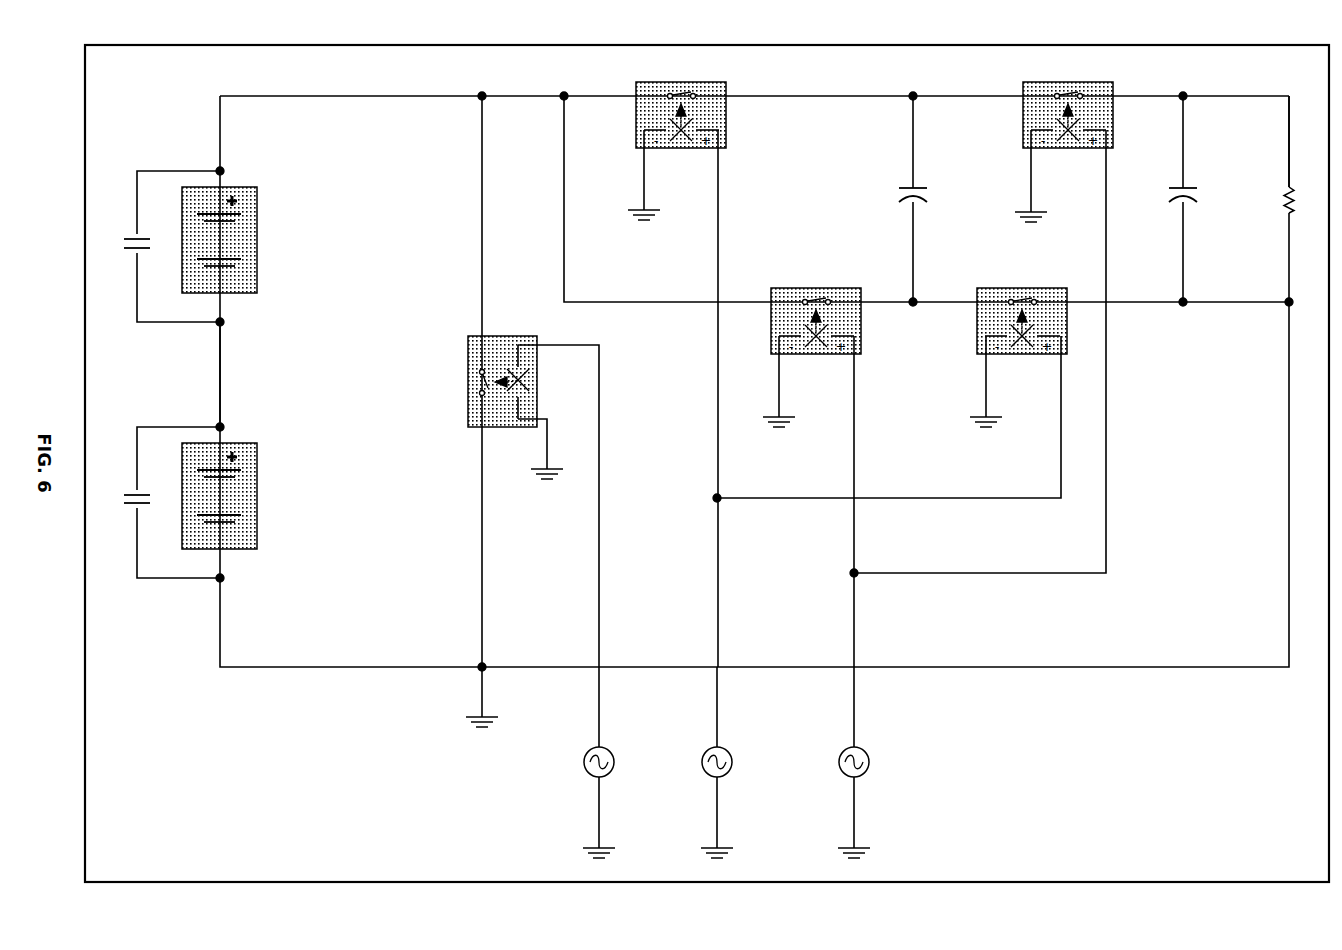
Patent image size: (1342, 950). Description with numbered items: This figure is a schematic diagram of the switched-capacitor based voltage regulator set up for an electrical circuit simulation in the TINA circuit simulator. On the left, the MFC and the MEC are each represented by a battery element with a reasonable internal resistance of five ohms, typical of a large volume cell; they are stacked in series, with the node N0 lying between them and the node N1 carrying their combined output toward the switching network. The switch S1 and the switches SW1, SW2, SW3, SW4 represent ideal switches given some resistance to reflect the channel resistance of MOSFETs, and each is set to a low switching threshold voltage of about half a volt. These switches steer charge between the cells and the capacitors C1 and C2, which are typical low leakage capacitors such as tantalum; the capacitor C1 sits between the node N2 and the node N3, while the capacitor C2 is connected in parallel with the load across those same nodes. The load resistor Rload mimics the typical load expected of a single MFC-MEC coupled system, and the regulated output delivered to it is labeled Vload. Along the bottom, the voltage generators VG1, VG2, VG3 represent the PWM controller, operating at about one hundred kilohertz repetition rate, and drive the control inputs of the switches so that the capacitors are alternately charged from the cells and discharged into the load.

The node N0 between MFC and MEC N0 is at (211, 374).
The node N1 is at (480, 409).
The node N2 is at (754, 89).
The node N3 is at (926, 199).
The element MFC is at (297, 240).
The element MEC is at (297, 496).
The ideal switch S1 is at (515, 399).
The ideal switch SW1 is at (686, 374).
The ideal switch SW2 is at (821, 477).
The ideal switch SW3 is at (990, 329).
The ideal switch SW4 is at (899, 395).
The capacitor C1 is at (925, 199).
The capacitor C2 is at (1197, 199).
The load resistor Rload is at (1300, 196).
The load voltage Vload is at (1280, 141).
The PWM controller generator VG1 is at (566, 601).
The PWM controller generator VG2 is at (699, 762).
The PWM controller generator VG3 is at (836, 762).